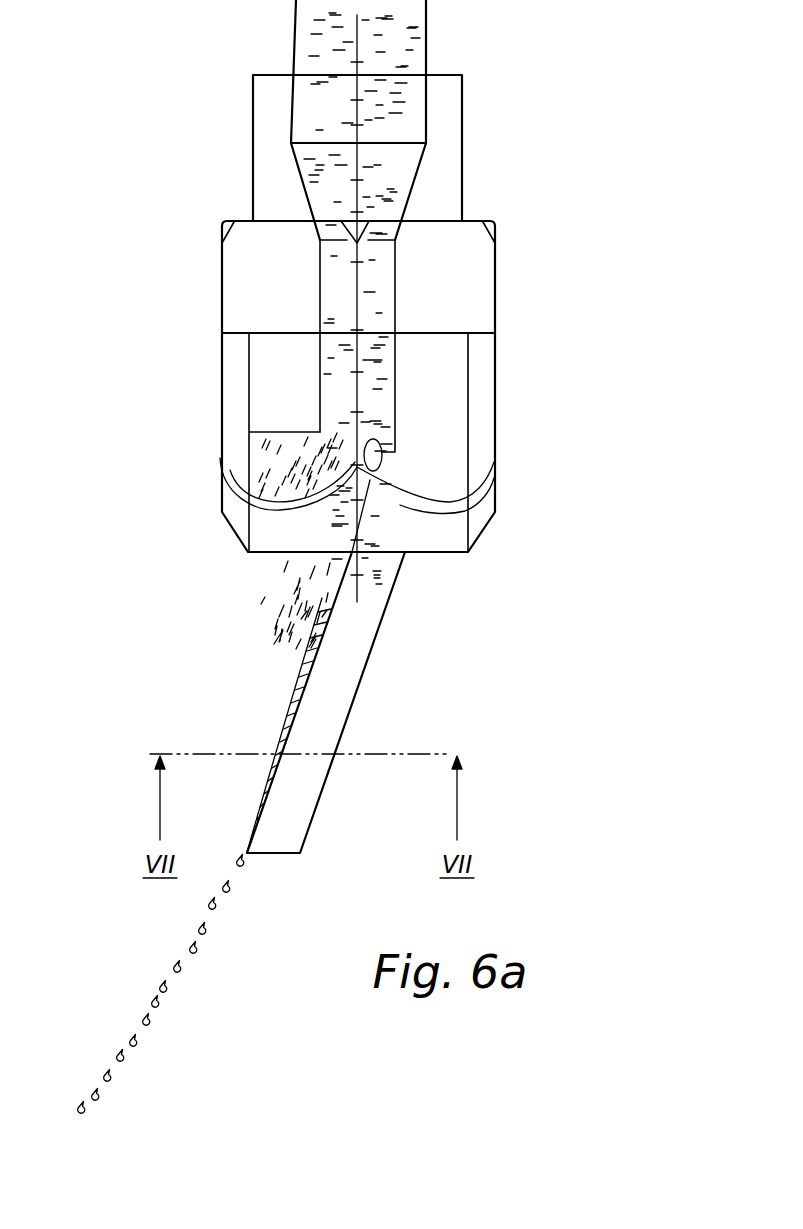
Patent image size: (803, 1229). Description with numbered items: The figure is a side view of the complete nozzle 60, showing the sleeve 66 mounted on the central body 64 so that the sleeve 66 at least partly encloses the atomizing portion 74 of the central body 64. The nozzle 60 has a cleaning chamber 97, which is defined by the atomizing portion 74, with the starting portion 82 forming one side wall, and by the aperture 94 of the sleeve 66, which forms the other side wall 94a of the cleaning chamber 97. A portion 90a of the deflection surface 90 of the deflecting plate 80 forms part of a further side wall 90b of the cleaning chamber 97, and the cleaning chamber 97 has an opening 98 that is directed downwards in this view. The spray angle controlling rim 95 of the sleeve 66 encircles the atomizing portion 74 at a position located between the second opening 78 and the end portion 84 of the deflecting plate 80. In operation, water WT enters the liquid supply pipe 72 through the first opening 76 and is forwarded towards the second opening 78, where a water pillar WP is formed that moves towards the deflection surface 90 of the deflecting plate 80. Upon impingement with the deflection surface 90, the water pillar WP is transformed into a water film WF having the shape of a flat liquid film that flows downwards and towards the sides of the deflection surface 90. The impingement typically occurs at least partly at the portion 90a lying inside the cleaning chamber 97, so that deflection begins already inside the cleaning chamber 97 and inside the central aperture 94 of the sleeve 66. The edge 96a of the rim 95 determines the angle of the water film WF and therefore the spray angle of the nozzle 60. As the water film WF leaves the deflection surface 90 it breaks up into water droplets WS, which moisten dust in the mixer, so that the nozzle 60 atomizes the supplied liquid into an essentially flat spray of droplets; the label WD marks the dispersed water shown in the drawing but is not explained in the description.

The nozzle 60 is at (386, 820).
The central body 64 is at (242, 282).
The sleeve 66 is at (233, 436).
The liquid supply pipe 72 is at (296, 196).
The atomizing portion 74 is at (433, 433).
The first opening 76 is at (296, 90).
The second opening 78 is at (340, 447).
The deflecting plate 80 is at (352, 662).
The starting portion 82 is at (360, 487).
The end portion 84 is at (288, 830).
The deflection surface 90 is at (288, 720).
The portion of deflection surface 90a is at (367, 480).
The side wall 90b is at (370, 438).
The aperture 94 is at (235, 480).
The side wall 94a is at (250, 442).
The spray angle controlling rim 95 is at (238, 533).
The edge 96a is at (247, 553).
The cleaning chamber 97 is at (235, 513).
The opening 98 is at (262, 608).
The water WT is at (397, 23).
The water dispersion WD is at (282, 462).
The water pillar WP is at (335, 527).
The water film WF is at (280, 740).
The water droplets WS is at (223, 888).